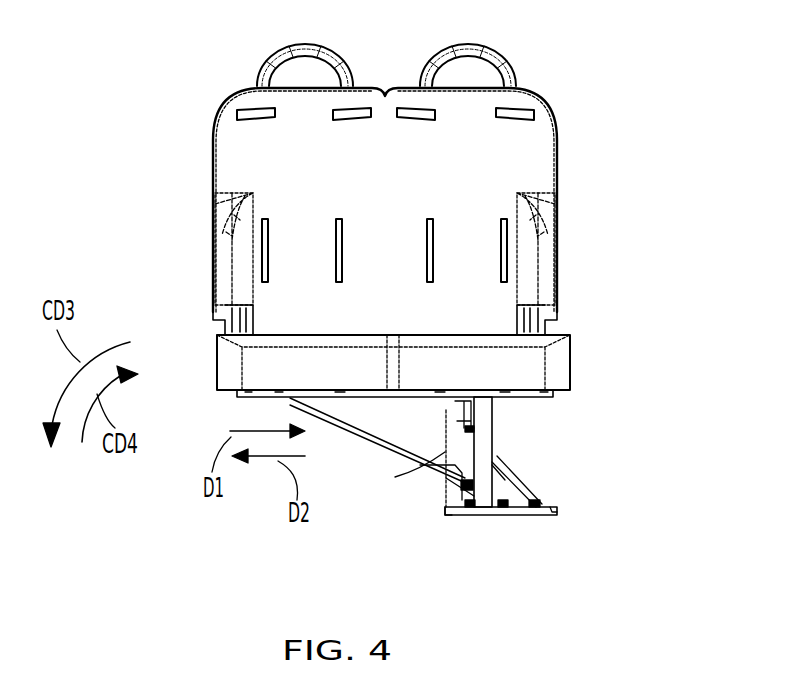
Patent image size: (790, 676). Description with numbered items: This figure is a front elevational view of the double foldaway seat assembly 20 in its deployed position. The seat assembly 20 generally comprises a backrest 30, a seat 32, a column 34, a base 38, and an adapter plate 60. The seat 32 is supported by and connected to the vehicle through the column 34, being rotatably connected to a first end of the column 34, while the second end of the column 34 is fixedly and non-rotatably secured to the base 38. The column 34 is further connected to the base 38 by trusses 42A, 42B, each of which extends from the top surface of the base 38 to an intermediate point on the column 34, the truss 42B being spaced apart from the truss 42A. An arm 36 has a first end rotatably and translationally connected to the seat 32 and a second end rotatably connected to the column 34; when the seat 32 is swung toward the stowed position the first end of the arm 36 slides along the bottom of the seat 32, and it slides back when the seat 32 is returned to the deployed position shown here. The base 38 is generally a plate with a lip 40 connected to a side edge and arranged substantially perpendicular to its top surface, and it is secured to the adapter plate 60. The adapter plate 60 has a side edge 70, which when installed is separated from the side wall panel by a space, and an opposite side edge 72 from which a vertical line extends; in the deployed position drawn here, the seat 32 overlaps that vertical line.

The seat assembly 20 is at (618, 150).
The backrest 30 is at (398, 95).
The seat 32 is at (258, 360).
The column 34 is at (483, 418).
The arm 36 is at (358, 436).
The base 38 is at (545, 508).
The lip 40 is at (447, 493).
The truss 42A is at (529, 491).
The truss 42B is at (502, 488).
The adapter plate 60 is at (505, 516).
The side edge 70 is at (557, 514).
The side edge 72 is at (450, 516).